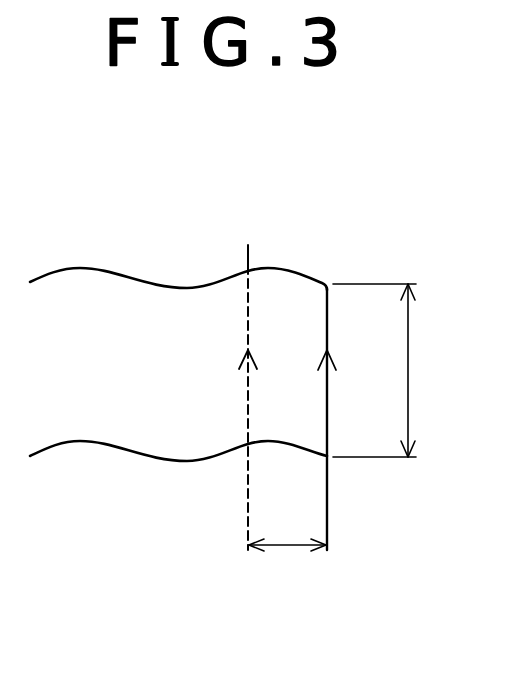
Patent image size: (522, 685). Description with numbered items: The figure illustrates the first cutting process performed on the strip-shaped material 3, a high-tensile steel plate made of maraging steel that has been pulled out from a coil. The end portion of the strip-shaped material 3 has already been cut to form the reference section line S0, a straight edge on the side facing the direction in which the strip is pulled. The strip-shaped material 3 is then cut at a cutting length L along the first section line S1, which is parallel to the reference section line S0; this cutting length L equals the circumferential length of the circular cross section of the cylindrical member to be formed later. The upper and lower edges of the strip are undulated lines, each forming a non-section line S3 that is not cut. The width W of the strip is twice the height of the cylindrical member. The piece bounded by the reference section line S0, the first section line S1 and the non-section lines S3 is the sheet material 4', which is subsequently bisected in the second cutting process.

The strip-shaped material 3 is at (61, 283).
The non-section line S3 is at (143, 282).
The sheet material 4' is at (306, 295).
The first section line S1 is at (248, 262).
The reference section line S0 is at (328, 311).
The width W is at (408, 370).
The cutting length L is at (288, 547).